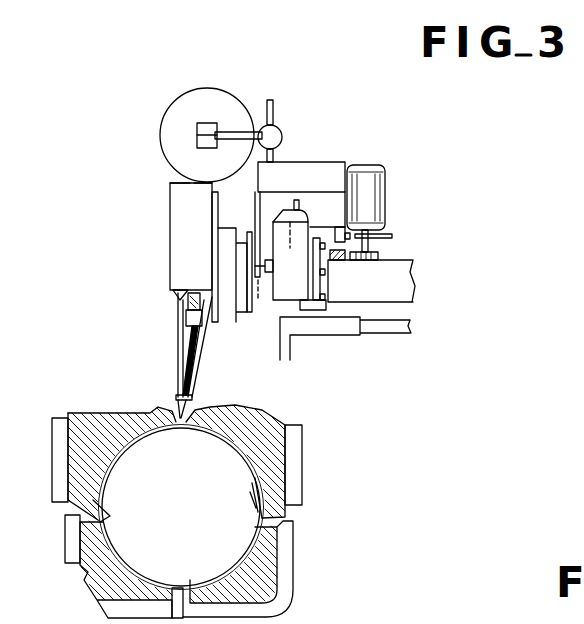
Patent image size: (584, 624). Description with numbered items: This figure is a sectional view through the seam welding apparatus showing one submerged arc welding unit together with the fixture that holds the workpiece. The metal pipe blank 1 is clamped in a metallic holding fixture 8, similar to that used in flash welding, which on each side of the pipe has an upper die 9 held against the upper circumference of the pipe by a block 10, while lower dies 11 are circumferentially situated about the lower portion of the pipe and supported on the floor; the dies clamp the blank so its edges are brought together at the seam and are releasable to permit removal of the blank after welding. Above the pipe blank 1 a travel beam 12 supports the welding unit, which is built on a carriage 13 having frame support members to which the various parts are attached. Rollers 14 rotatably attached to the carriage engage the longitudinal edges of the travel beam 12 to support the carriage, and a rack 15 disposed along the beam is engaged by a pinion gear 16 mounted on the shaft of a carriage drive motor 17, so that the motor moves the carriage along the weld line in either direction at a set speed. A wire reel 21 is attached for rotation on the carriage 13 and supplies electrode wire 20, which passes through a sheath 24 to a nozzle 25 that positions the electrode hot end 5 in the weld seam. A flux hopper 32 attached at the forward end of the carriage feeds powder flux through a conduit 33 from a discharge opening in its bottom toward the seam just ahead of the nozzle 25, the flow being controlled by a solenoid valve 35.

The metal pipe blank 1 is at (122, 450).
The electrode hot end 5 is at (275, 303).
The holding fixture 8 is at (330, 490).
The upper die 9 is at (270, 495).
The block 10 is at (275, 445).
The lower die 11 is at (265, 536).
The travel beam 12 is at (290, 283).
The carriage 13 is at (270, 192).
The rollers 14 is at (290, 244).
The rack 15 is at (340, 262).
The pinion gear 16 is at (375, 253).
The carriage drive motor 17 is at (367, 178).
The electrode wire 20 is at (172, 179).
The wire reel 21 is at (177, 112).
The sheath 24 is at (185, 350).
The nozzle 25 is at (179, 412).
The flux hopper 32 is at (183, 221).
The conduit 33 is at (178, 322).
The solenoid valve 35 is at (177, 298).